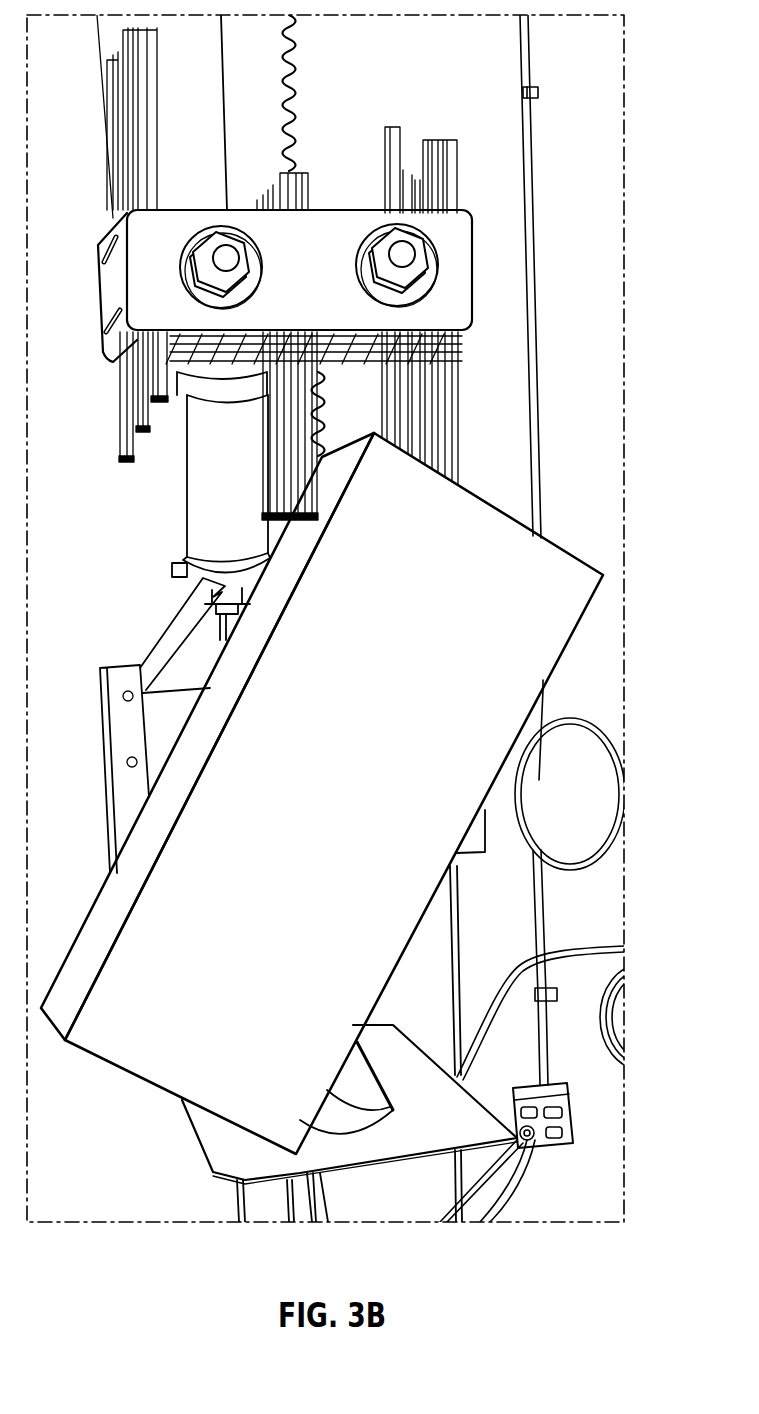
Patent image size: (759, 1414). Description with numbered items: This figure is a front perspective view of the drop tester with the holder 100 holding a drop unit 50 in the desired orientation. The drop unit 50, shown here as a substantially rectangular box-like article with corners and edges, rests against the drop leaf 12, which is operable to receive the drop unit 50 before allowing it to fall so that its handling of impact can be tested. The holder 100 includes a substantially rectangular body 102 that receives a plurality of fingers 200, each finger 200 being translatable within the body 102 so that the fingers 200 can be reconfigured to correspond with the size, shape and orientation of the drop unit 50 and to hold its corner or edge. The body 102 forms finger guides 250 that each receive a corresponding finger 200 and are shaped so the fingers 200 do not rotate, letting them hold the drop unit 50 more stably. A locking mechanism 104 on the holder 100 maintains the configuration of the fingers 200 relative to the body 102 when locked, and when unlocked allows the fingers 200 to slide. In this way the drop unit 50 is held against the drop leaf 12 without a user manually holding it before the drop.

The drop leaf 12 is at (398, 1062).
The drop unit 50 is at (548, 618).
The holder 100 is at (351, 259).
The body 102 is at (455, 313).
The locking mechanism 104 is at (254, 262).
The fingers 200 is at (305, 175).
The finger guides 250 is at (182, 368).